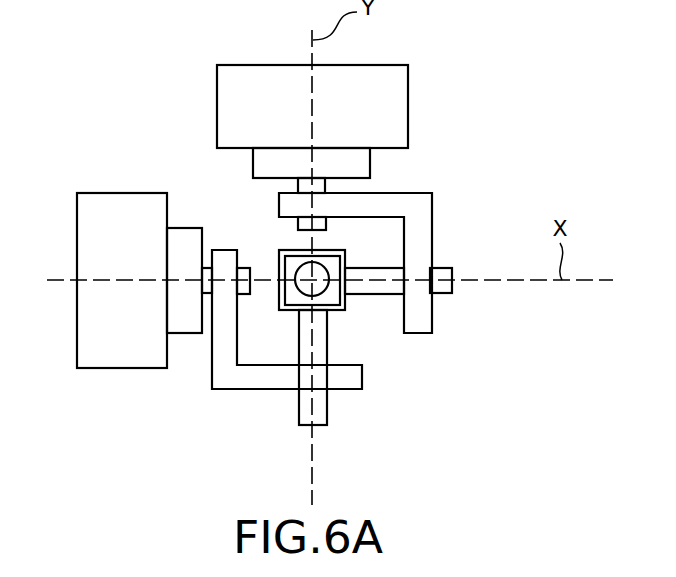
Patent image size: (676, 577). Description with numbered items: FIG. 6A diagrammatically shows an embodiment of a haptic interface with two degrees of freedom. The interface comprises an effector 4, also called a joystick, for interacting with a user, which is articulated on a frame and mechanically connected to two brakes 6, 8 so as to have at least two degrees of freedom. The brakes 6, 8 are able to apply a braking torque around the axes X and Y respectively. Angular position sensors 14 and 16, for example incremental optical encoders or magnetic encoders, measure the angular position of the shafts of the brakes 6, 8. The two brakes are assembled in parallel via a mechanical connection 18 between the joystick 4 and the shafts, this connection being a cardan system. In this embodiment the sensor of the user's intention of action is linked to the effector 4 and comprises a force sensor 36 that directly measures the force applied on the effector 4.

The effector 4 is at (320, 276).
The brake 6 is at (116, 258).
The brake 8 is at (253, 75).
The angular position sensor 14 is at (182, 327).
The angular position sensor 16 is at (262, 163).
The mechanical connection 18 is at (346, 398).
The force sensor 36 is at (332, 298).